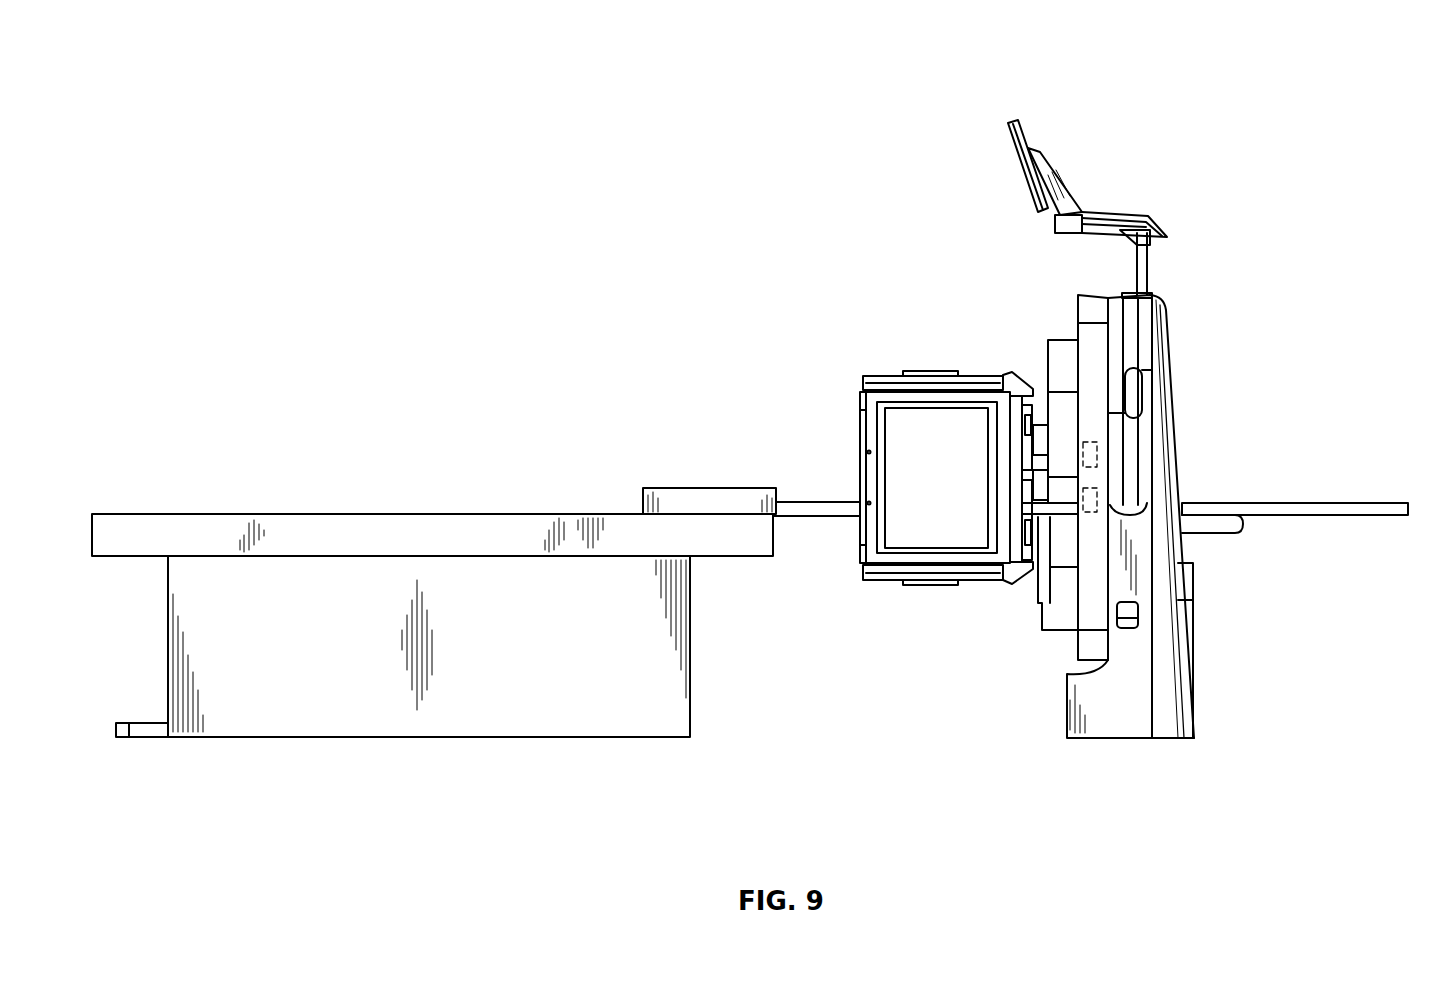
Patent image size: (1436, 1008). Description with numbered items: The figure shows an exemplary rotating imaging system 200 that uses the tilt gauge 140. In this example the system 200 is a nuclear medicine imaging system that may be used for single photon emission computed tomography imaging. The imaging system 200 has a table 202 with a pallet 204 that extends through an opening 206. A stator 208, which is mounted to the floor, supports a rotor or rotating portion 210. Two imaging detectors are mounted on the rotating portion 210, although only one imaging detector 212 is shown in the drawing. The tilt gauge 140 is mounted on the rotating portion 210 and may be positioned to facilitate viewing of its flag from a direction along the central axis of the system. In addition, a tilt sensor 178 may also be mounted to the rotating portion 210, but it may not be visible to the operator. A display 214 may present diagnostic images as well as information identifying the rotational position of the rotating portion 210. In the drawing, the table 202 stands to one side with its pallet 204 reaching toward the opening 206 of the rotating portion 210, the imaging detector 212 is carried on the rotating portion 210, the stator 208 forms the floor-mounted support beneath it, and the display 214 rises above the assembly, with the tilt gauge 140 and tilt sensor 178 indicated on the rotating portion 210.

The rotating imaging system 200 is at (265, 215).
The table 202 is at (190, 516).
The pallet 204 is at (821, 500).
The opening 206 is at (1178, 458).
The stator 208 is at (1098, 703).
The rotating portion 210 is at (1078, 643).
The imaging detector 212 is at (862, 378).
The display 214 is at (1030, 136).
The tilt gauge 140 is at (1097, 455).
The tilt sensor 178 is at (1097, 500).